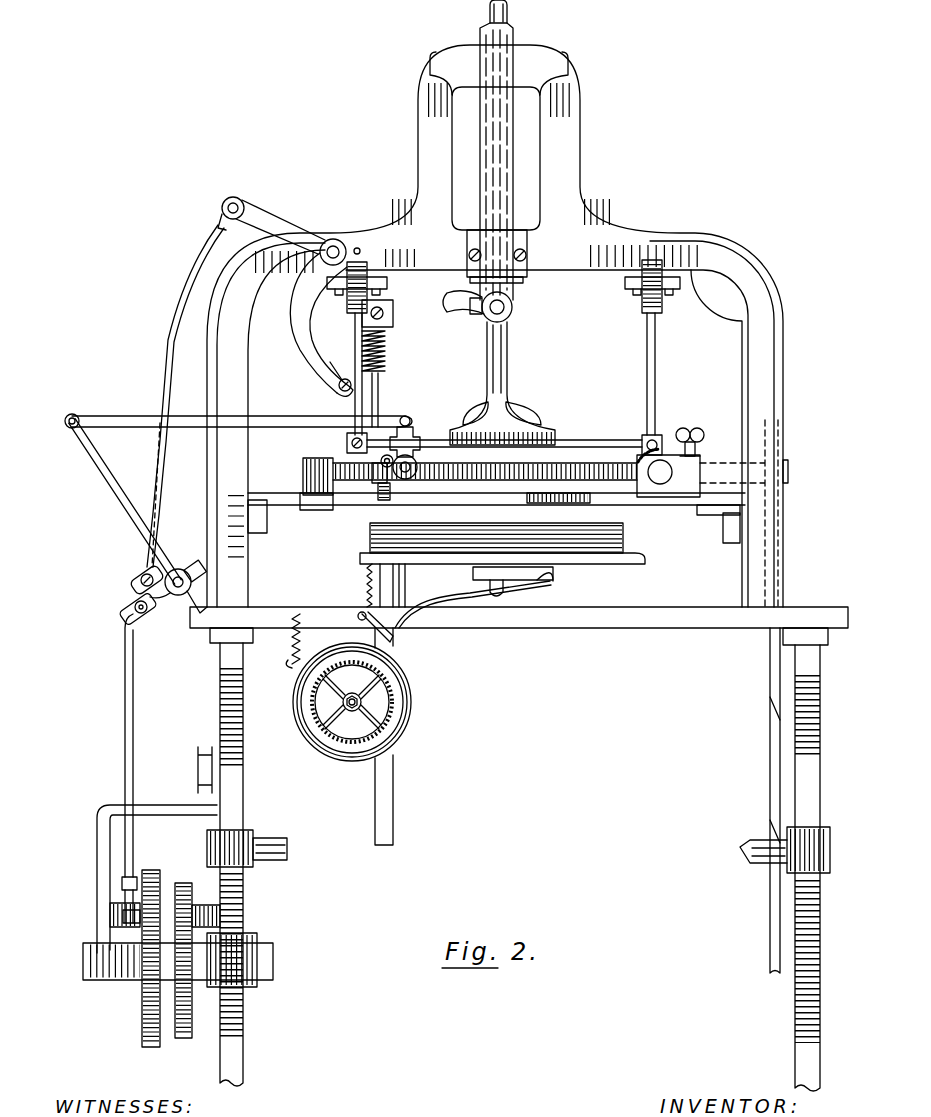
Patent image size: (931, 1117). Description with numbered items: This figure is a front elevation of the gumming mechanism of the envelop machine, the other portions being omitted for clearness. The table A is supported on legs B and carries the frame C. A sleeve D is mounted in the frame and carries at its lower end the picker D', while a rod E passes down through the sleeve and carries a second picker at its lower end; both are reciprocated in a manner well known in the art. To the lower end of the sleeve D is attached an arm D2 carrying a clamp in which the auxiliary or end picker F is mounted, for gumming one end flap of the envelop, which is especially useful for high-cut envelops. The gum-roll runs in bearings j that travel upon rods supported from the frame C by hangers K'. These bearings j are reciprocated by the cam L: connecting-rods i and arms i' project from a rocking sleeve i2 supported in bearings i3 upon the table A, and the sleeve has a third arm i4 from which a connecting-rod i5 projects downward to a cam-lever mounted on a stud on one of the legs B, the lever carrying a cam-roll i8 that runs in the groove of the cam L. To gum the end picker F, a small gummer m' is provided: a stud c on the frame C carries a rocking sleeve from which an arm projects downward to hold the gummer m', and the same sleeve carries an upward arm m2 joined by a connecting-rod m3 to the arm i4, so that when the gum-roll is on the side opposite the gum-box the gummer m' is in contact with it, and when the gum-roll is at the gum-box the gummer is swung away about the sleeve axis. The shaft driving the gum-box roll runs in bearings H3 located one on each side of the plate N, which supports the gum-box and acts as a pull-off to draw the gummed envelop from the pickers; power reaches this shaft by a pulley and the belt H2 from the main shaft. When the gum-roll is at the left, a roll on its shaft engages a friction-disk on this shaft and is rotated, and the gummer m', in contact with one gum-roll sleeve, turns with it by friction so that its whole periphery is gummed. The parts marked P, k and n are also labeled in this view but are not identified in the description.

The frame C is at (495, 326).
The rod E is at (508, 9).
The sleeve D is at (510, 161).
The arm D2 is at (466, 306).
The picker D' is at (524, 383).
The hangers K' is at (483, 357).
The bearings H3 is at (332, 461).
The end picker F is at (380, 396).
The plate N is at (340, 242).
The stud c is at (362, 253).
The arm m2 is at (330, 236).
The gummer m' is at (335, 395).
The connecting-rod m3 is at (166, 353).
The connecting-rods i is at (238, 411).
The bearings j is at (415, 438).
The arms i' is at (125, 507).
The bearings i3 is at (184, 571).
The rocking sleeve i2 is at (180, 600).
The third arm i4 is at (140, 622).
The connecting-rod i5 is at (125, 716).
The cam-roll i8 is at (140, 912).
The cam L is at (165, 869).
The table A is at (698, 629).
The legs B is at (218, 697).
The belt H2 is at (771, 777).
The bed plate P is at (597, 565).
The slide block k is at (650, 506).
The guide rail screw n is at (388, 500).